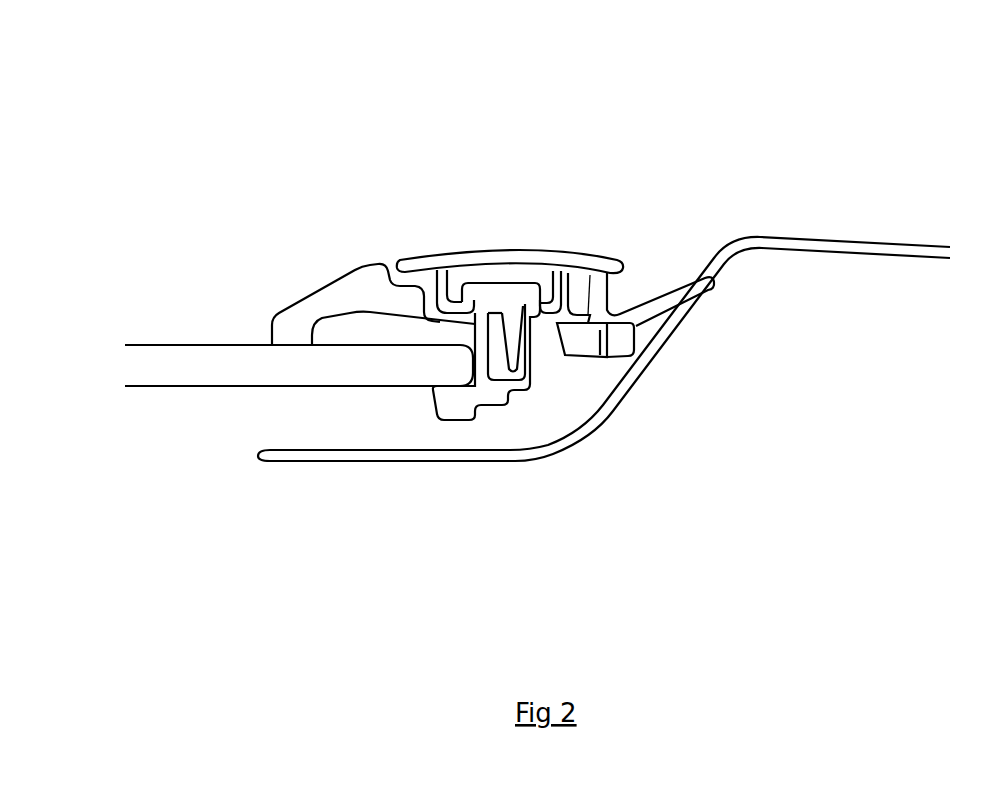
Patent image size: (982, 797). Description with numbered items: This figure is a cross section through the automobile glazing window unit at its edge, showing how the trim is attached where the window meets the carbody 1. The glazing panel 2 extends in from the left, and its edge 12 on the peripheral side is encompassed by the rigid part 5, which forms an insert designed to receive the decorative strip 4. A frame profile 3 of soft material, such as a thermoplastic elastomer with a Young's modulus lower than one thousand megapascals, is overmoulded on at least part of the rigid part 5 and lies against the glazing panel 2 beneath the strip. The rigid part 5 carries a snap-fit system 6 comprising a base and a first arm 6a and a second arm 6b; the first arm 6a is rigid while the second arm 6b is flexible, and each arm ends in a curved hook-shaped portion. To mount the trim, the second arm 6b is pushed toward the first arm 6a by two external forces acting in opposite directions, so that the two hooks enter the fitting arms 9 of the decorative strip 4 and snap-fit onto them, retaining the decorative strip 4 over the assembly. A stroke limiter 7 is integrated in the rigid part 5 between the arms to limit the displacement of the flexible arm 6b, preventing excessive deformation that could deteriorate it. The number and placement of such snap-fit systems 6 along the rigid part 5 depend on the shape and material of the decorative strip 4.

The carbody 1 is at (892, 252).
The glazing panel 2 is at (205, 377).
The frame profile 3 is at (303, 313).
The decorative strip 4 is at (592, 258).
The rigid part 5 is at (383, 330).
The snap-fit system 6 is at (458, 391).
The first arm 6a is at (485, 308).
The second arm 6b is at (530, 332).
The stroke limiter 7 is at (503, 332).
The fitting arms 9 is at (558, 303).
The edge of the glazing panel 12 is at (370, 368).